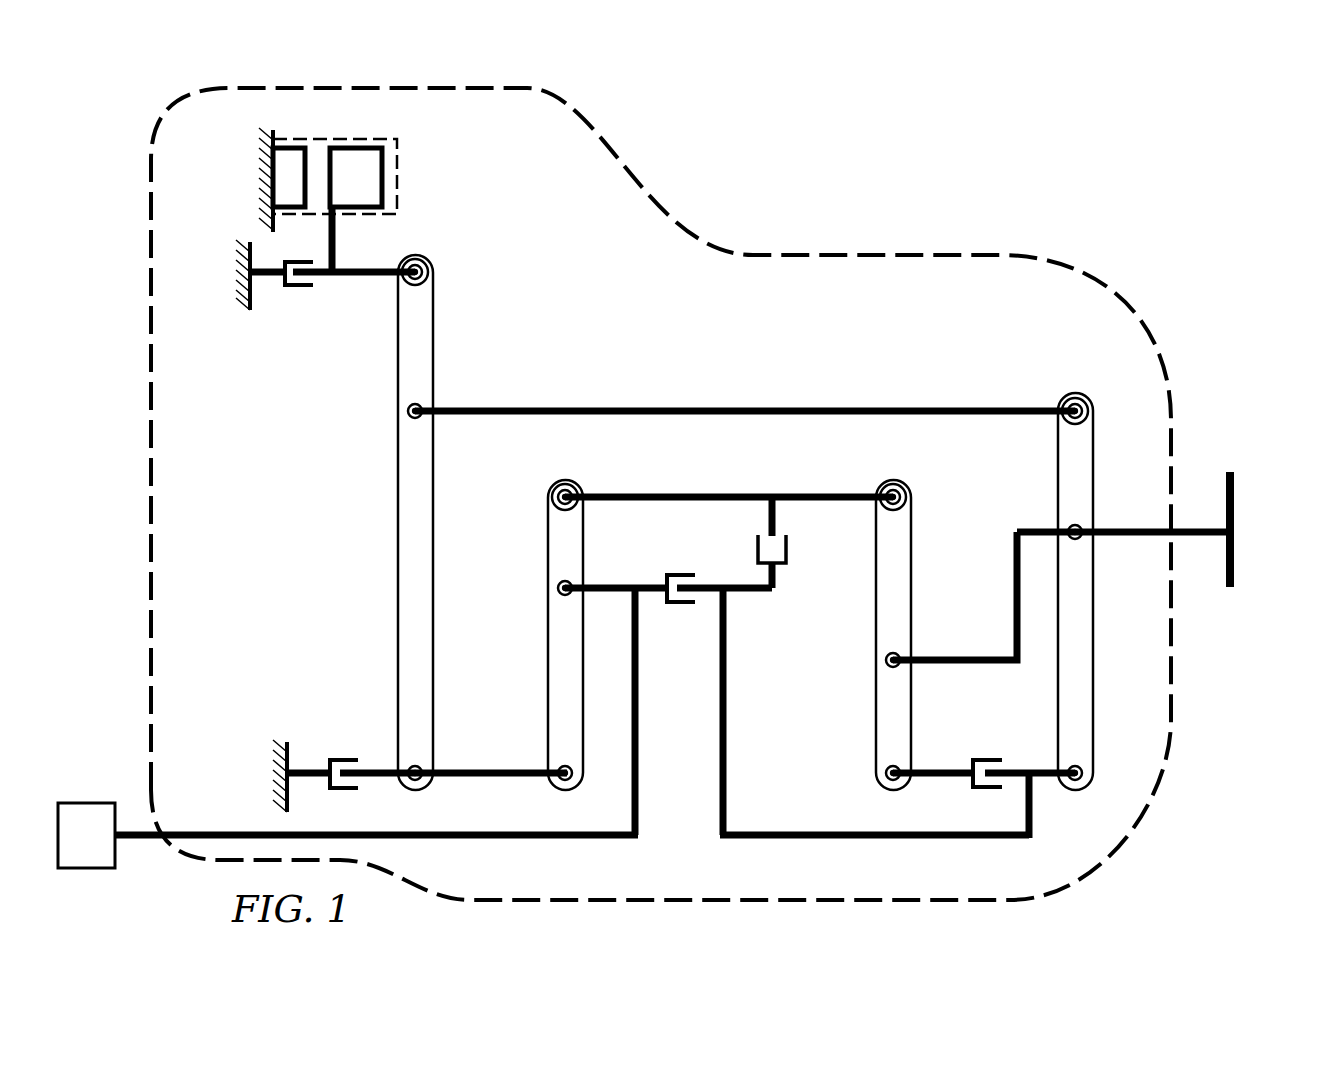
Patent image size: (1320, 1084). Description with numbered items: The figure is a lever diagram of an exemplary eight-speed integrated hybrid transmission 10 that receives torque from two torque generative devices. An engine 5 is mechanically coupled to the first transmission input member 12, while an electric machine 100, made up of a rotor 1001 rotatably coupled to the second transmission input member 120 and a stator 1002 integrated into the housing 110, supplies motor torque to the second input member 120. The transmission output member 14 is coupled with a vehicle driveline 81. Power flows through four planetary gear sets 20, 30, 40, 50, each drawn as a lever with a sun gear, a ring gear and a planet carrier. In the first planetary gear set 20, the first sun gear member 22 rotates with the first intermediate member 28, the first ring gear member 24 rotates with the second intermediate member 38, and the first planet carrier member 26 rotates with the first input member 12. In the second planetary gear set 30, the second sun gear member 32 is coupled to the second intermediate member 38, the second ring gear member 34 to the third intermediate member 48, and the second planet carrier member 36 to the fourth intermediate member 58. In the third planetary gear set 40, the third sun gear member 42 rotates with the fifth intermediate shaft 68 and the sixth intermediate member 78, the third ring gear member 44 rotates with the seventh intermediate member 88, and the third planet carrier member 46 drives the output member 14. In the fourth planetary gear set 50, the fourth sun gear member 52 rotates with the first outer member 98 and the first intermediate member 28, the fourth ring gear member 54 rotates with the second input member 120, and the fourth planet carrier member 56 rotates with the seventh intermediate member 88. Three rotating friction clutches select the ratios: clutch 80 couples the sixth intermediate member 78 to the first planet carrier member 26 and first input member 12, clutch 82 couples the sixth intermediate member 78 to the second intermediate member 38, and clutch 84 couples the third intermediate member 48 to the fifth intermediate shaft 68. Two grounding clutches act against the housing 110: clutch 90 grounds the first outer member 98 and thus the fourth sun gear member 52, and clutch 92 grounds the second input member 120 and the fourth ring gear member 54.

The engine 5 is at (86, 835).
The integrated hybrid transmission 10 is at (915, 255).
The first transmission input member 12 is at (540, 838).
The transmission output member 14 is at (1110, 530).
The first planetary gear set 20 is at (575, 482).
The first sun gear member 22 is at (560, 768).
The first ring gear member 24 is at (572, 505).
The first planet carrier member 26 is at (556, 592).
The first intermediate member 28 is at (470, 785).
The second planetary gear set 30 is at (897, 474).
The second sun gear member 32 is at (900, 505).
The second ring gear member 34 is at (886, 770).
The second planet carrier member 36 is at (886, 658).
The second intermediate member 38 is at (700, 496).
The third planetary gear set 40 is at (1066, 395).
The third sun gear member 42 is at (1082, 773).
The third ring gear member 44 is at (1085, 408).
The third planet carrier member 46 is at (1068, 530).
The third intermediate member 48 is at (935, 770).
The fourth planetary gear set 50 is at (424, 256).
The fourth sun gear member 52 is at (420, 765).
The fourth ring gear member 54 is at (425, 280).
The fourth planet carrier member 56 is at (420, 418).
The fourth intermediate member 58 is at (955, 658).
The fifth intermediate shaft 68 is at (1020, 770).
The sixth intermediate member 78 is at (720, 745).
The clutch 80 is at (680, 605).
The vehicle driveline 81 is at (1237, 487).
The clutch 82 is at (790, 553).
The clutch 84 is at (990, 760).
The seventh intermediate member 88 is at (788, 410).
The clutch 90 is at (337, 758).
The clutch 92 is at (298, 286).
The first outer member 98 is at (360, 772).
The electric machine 100 is at (400, 188).
The housing 110 is at (258, 200).
The second transmission input member 120 is at (335, 250).
The rotor 1001 is at (370, 175).
The stator 1002 is at (300, 170).